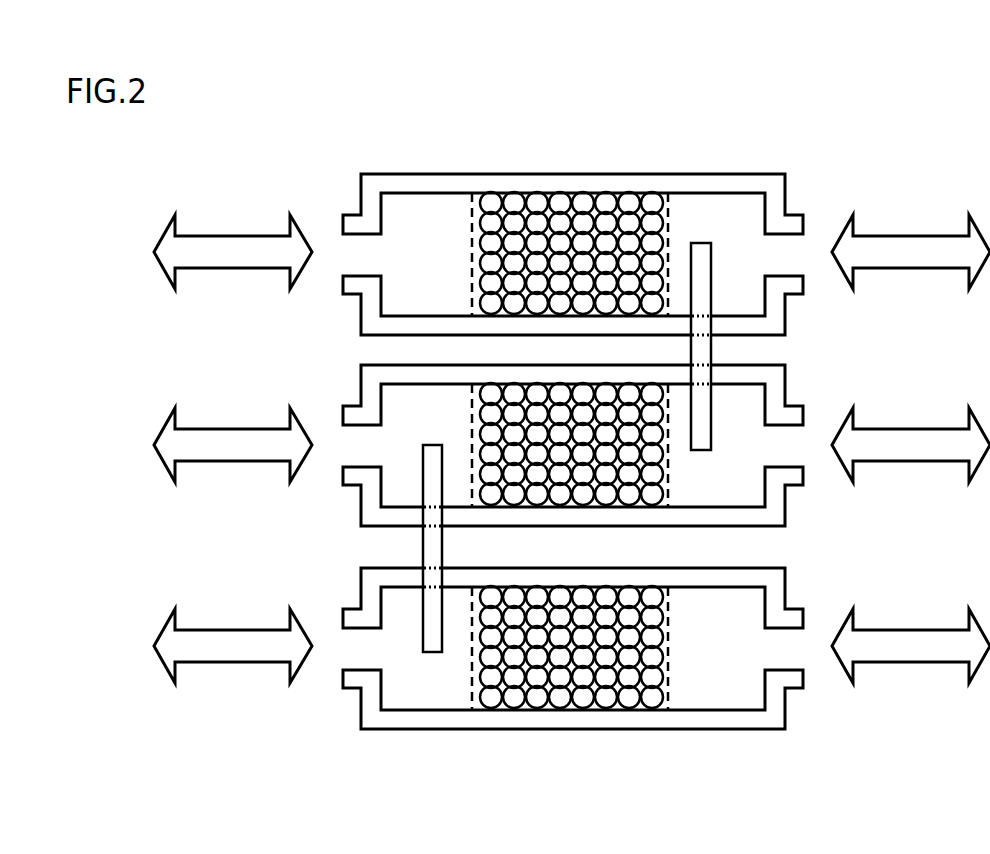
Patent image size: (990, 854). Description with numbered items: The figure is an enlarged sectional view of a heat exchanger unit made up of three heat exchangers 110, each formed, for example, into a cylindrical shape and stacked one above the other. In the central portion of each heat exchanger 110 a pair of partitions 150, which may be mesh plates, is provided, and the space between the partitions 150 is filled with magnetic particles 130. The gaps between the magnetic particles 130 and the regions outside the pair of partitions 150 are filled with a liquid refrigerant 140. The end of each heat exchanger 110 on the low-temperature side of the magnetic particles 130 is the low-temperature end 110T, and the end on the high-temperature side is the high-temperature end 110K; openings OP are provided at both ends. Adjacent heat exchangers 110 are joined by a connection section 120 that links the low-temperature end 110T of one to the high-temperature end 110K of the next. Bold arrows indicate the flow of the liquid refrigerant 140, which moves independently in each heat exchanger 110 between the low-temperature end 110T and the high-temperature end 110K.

The heat exchanger 110 is at (557, 180).
The low-temperature end 110T is at (402, 220).
The high-temperature end 110K is at (752, 233).
The connection section 120 is at (700, 245).
The magnetic particles 130 is at (510, 205).
The liquid refrigerant 140 is at (402, 205).
The partition 150 is at (466, 215).
The opening OP is at (788, 257).